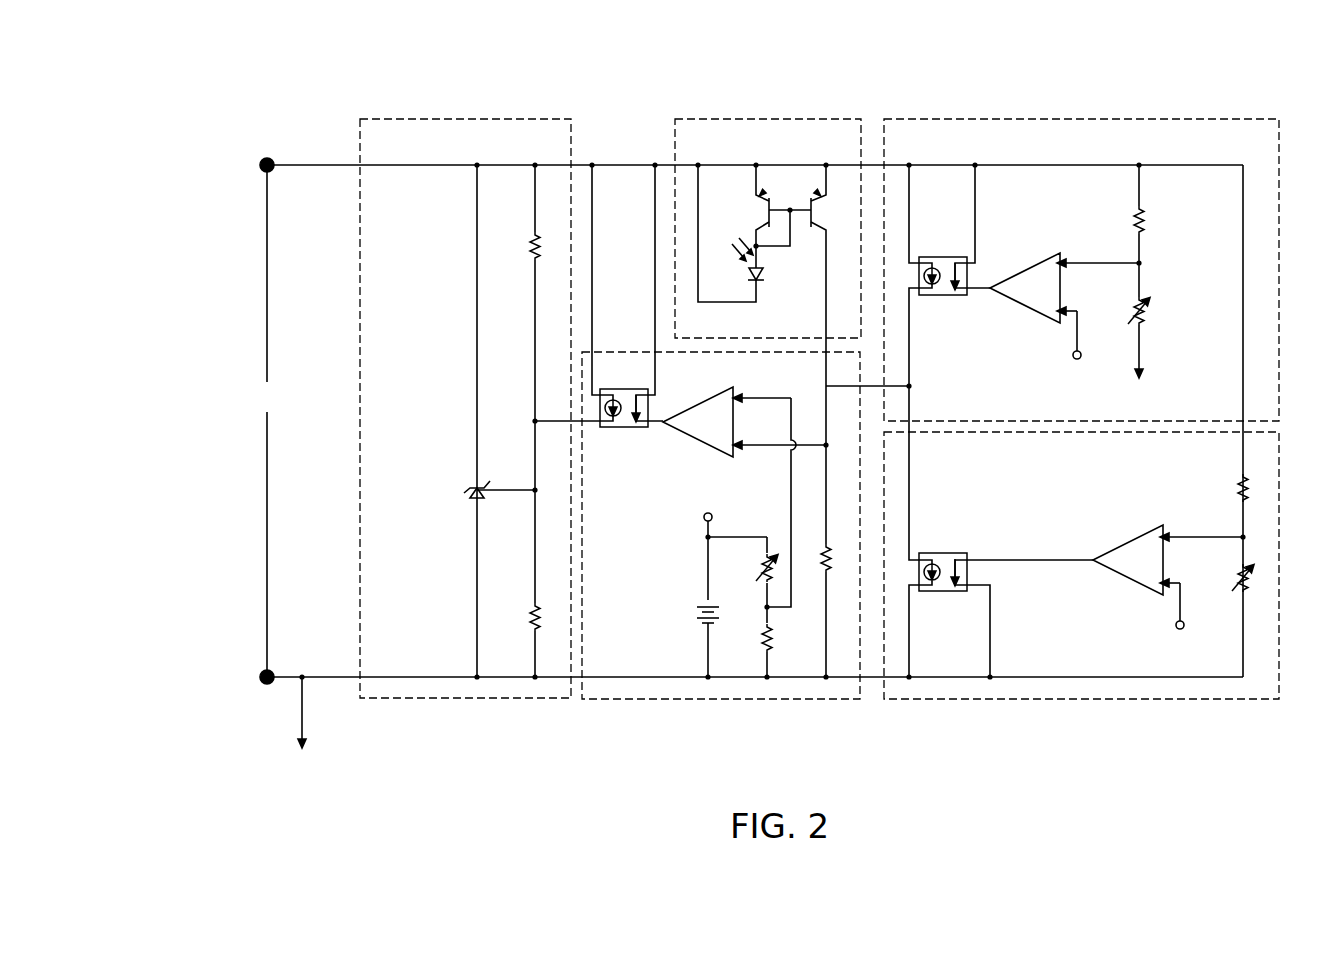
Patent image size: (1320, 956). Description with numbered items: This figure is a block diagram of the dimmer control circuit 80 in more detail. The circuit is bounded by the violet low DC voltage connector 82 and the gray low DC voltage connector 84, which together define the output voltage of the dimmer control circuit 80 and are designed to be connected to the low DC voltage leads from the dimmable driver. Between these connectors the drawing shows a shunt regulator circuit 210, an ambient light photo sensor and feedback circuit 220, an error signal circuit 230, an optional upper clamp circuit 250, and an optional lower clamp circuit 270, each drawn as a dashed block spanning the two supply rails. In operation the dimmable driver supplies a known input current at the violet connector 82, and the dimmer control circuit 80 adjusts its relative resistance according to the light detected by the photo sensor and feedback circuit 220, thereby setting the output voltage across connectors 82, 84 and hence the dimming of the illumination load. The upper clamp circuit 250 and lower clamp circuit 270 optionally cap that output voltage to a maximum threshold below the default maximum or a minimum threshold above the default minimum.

The dimmer control circuit 80 is at (574, 712).
The violet low DC voltage connector 82 is at (276, 173).
The gray low DC voltage connector 84 is at (277, 668).
The shunt regulator circuit 210 is at (470, 118).
The ambient light photo sensor and feedback circuit 220 is at (775, 118).
The error signal circuit 230 is at (704, 700).
The upper clamp circuit 250 is at (1077, 118).
The lower clamp circuit 270 is at (1079, 700).